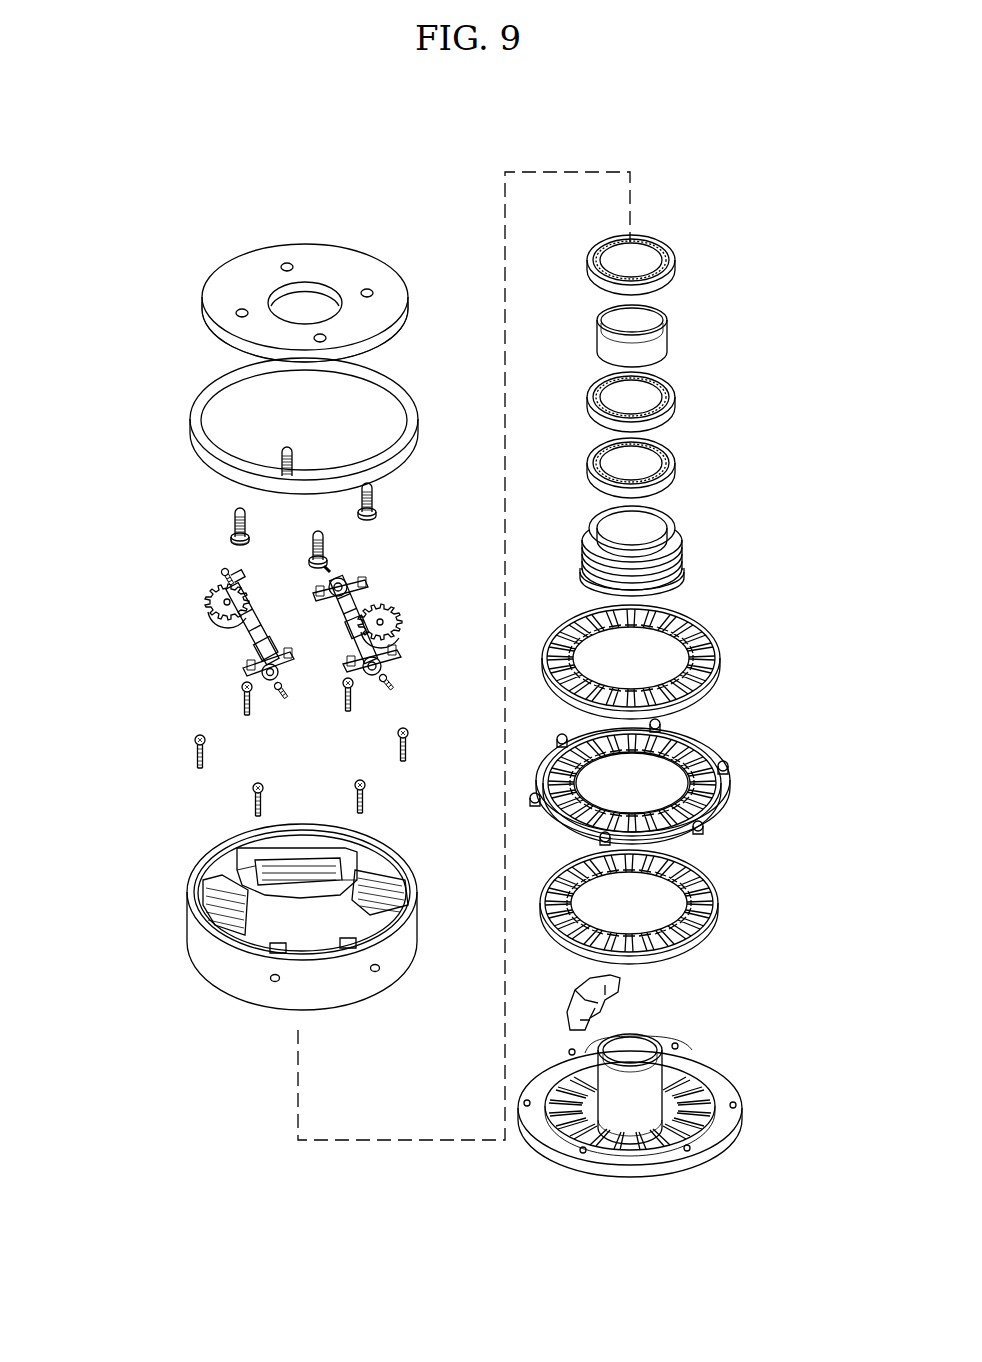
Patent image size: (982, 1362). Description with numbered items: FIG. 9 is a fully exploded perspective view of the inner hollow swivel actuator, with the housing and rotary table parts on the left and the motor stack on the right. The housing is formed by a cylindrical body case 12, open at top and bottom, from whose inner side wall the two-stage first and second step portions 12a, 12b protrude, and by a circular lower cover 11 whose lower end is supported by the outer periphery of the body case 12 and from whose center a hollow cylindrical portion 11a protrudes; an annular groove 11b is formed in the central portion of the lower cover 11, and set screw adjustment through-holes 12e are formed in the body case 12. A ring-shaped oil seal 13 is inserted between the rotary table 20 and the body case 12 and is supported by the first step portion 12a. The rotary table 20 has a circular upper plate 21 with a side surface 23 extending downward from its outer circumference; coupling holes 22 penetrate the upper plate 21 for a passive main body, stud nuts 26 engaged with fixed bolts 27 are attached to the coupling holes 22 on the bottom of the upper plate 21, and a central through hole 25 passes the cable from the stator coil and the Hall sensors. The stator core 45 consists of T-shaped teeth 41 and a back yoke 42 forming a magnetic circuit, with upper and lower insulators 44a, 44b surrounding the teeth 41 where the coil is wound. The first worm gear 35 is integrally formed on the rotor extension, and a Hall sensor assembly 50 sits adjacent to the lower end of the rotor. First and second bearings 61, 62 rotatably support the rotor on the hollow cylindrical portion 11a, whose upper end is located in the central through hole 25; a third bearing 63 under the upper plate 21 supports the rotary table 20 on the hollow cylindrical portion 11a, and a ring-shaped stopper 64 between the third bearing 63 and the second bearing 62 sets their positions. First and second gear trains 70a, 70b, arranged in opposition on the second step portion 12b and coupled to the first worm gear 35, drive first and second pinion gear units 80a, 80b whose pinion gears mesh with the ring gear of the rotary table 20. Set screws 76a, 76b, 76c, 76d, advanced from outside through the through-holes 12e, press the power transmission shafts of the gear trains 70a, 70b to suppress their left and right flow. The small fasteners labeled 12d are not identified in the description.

The lower cover 11 is at (657, 1116).
The hollow cylindrical portion 11a is at (725, 1122).
The annular groove 11b is at (548, 1158).
The body case 12 is at (262, 872).
The first step portion 12a is at (222, 855).
The second step portion 12b is at (200, 893).
The screws 12d is at (193, 750).
The set screw adjustment through-holes 12e is at (272, 984).
The oil seal 13 is at (192, 422).
The rotary table 20 is at (291, 283).
The upper plate 21 is at (385, 311).
The coupling holes 22 is at (372, 289).
The side surface 23 is at (406, 330).
The central through hole 25 is at (332, 290).
The stud nuts 26 is at (231, 539).
The fixed bolts 27 is at (230, 514).
The first worm gear 35 is at (684, 541).
The teeth 41 is at (718, 771).
The back yoke 42 is at (720, 799).
The upper insulator 44a is at (722, 657).
The lower insulator 44b is at (720, 907).
The stator core 45 is at (682, 782).
The Hall sensor assembly 50 is at (624, 985).
The first bearing 61 is at (680, 468).
The second bearing 62 is at (680, 400).
The third bearing 63 is at (680, 262).
The stopper 64 is at (675, 340).
The first gear train 70a is at (194, 638).
The second gear train 70b is at (391, 652).
The set screw 76a is at (285, 696).
The set screw 76b is at (218, 568).
The set screw 76c is at (396, 682).
The set screw 76d is at (340, 560).
The first pinion gear unit 80a is at (204, 601).
The second pinion gear unit 80b is at (410, 614).